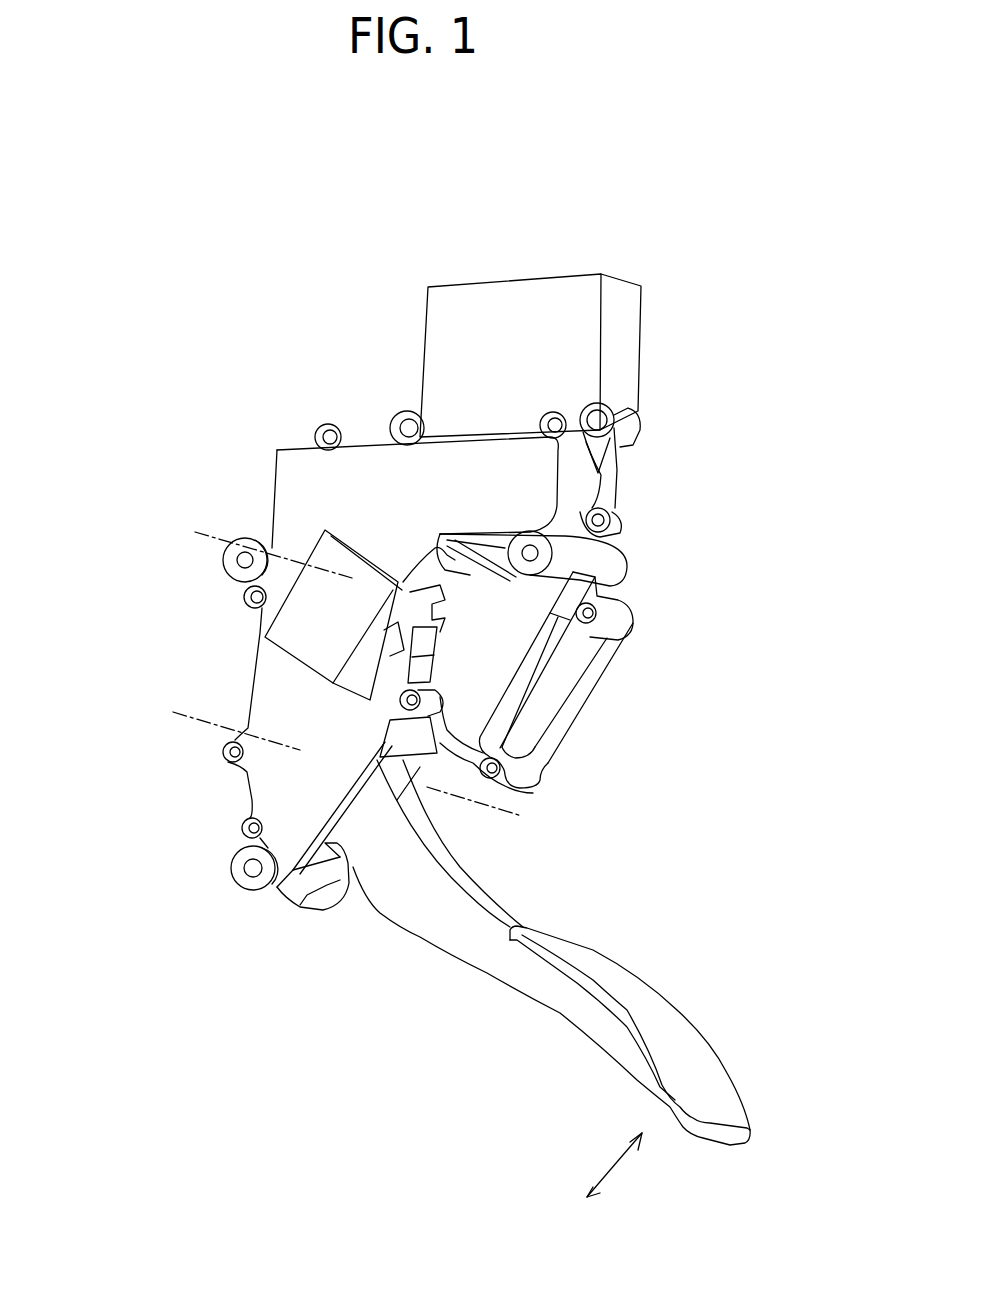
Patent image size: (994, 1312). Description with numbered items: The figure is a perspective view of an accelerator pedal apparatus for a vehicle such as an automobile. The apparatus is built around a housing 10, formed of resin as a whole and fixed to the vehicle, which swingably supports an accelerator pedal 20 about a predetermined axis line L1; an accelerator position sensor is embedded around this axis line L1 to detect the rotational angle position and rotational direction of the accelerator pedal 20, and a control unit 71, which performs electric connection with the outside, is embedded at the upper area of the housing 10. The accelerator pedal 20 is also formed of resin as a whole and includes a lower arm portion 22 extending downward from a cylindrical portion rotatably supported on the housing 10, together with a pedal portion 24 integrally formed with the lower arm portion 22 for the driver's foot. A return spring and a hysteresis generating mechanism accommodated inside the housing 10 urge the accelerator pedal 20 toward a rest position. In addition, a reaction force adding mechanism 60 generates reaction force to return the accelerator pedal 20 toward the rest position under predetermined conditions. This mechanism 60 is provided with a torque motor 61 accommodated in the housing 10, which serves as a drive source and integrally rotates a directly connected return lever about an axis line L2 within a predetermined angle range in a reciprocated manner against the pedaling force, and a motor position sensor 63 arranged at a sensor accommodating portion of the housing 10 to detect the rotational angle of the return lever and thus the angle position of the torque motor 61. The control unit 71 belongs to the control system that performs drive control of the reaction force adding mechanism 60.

The housing 10 is at (273, 785).
The accelerator pedal 20 is at (511, 957).
The lower arm portion 22 is at (402, 900).
The pedal portion 24 is at (687, 1042).
The reaction force adding mechanism 60 is at (431, 595).
The torque motor 61 is at (567, 678).
The motor position sensor 63 is at (292, 634).
The control unit 71 is at (552, 297).
The axis line L1 is at (193, 717).
The axis line L2 is at (210, 535).